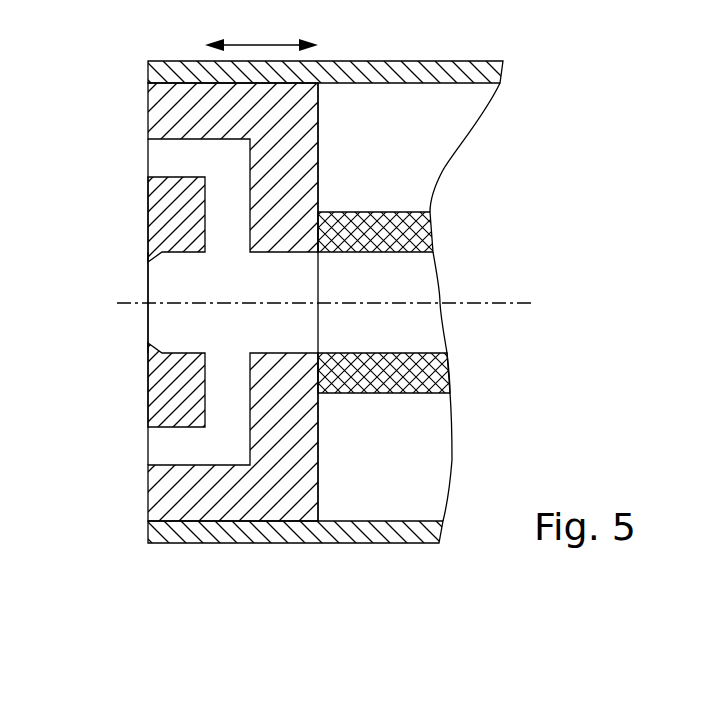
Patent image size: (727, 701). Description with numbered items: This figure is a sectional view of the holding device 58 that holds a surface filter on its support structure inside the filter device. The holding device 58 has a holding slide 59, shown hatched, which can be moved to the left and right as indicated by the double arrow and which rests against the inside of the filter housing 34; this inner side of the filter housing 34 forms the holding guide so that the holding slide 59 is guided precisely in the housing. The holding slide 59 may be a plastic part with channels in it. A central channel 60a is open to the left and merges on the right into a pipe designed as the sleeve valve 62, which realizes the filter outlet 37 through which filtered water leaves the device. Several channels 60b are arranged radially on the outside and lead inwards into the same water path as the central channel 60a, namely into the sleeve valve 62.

The filter housing 34 is at (480, 75).
The holding slide 59 is at (320, 156).
The holding device 58 is at (384, 191).
The filter outlet 37 is at (410, 276).
The sleeve valve 62 is at (430, 370).
The central channel 60a is at (170, 333).
The channels 60b is at (163, 155).